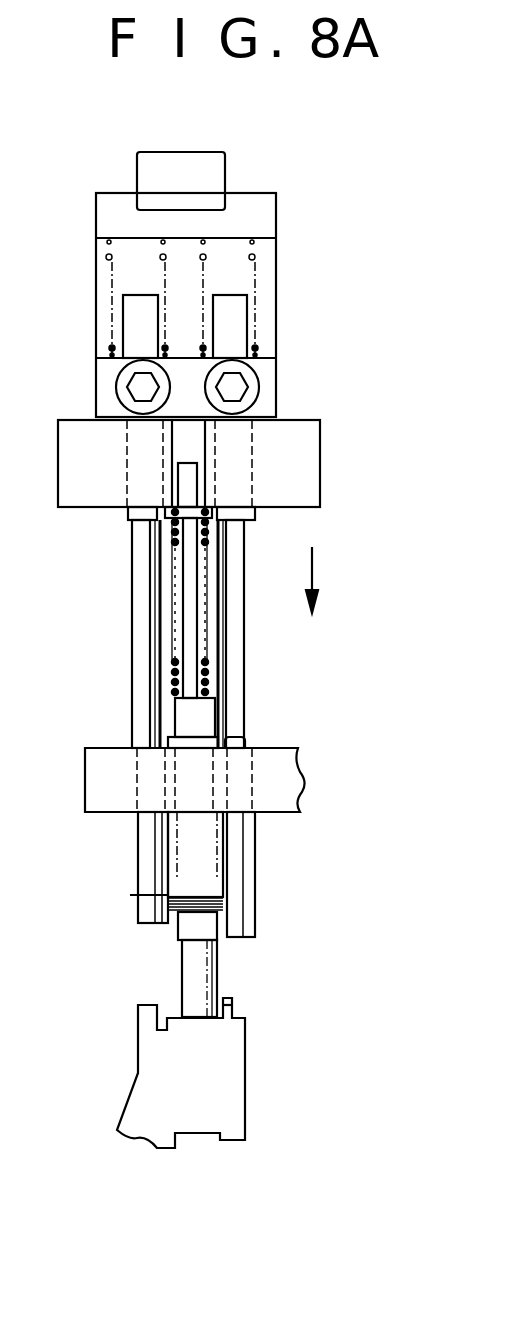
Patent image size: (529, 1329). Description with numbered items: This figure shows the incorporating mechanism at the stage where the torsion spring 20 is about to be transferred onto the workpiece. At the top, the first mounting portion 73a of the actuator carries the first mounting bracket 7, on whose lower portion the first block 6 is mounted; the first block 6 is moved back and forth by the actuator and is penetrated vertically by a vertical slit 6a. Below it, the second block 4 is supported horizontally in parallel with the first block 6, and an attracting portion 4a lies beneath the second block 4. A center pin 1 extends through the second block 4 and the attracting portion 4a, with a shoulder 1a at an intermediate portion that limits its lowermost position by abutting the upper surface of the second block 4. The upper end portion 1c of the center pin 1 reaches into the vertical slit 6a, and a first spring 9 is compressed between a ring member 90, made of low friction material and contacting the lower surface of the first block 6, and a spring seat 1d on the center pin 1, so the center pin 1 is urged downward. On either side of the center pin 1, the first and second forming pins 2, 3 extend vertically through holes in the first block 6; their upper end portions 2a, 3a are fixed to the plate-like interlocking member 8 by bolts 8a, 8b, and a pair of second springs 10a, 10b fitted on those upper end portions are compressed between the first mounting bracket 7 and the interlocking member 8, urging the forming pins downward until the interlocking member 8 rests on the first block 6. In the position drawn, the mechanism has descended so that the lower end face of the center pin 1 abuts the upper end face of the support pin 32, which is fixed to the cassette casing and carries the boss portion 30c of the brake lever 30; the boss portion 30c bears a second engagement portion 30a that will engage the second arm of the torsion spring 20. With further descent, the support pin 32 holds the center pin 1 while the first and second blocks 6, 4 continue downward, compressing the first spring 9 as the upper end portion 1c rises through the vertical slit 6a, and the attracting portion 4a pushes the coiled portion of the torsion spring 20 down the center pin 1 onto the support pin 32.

The center pin 1 is at (185, 585).
The shoulder 1a is at (240, 745).
The upper end portion 1c is at (195, 462).
The spring seat 1d is at (183, 710).
The first forming pin 2 is at (148, 845).
The upper end portion of first forming pin 2a is at (140, 320).
The second forming pin 3 is at (246, 846).
The upper end portion of second forming pin 3a is at (237, 310).
The second block 4 is at (100, 763).
The attracting portion 4a is at (185, 880).
The first block 6 is at (83, 495).
The vertical slit 6a is at (172, 442).
The first mounting bracket 7 is at (258, 208).
The interlocking member 8 is at (268, 368).
The bolt 8a is at (116, 387).
The bolt 8b is at (258, 392).
The first spring 9 is at (172, 670).
The second spring 10a is at (106, 257).
The second spring 10b is at (256, 257).
The torsion spring 20 is at (225, 910).
The brake lever 30 is at (128, 1060).
The second engagement portion 30a is at (233, 993).
The boss portion 30c is at (235, 1062).
The support pin 32 is at (182, 990).
The first mounting portion 73a is at (208, 170).
The ring member 90 is at (205, 540).